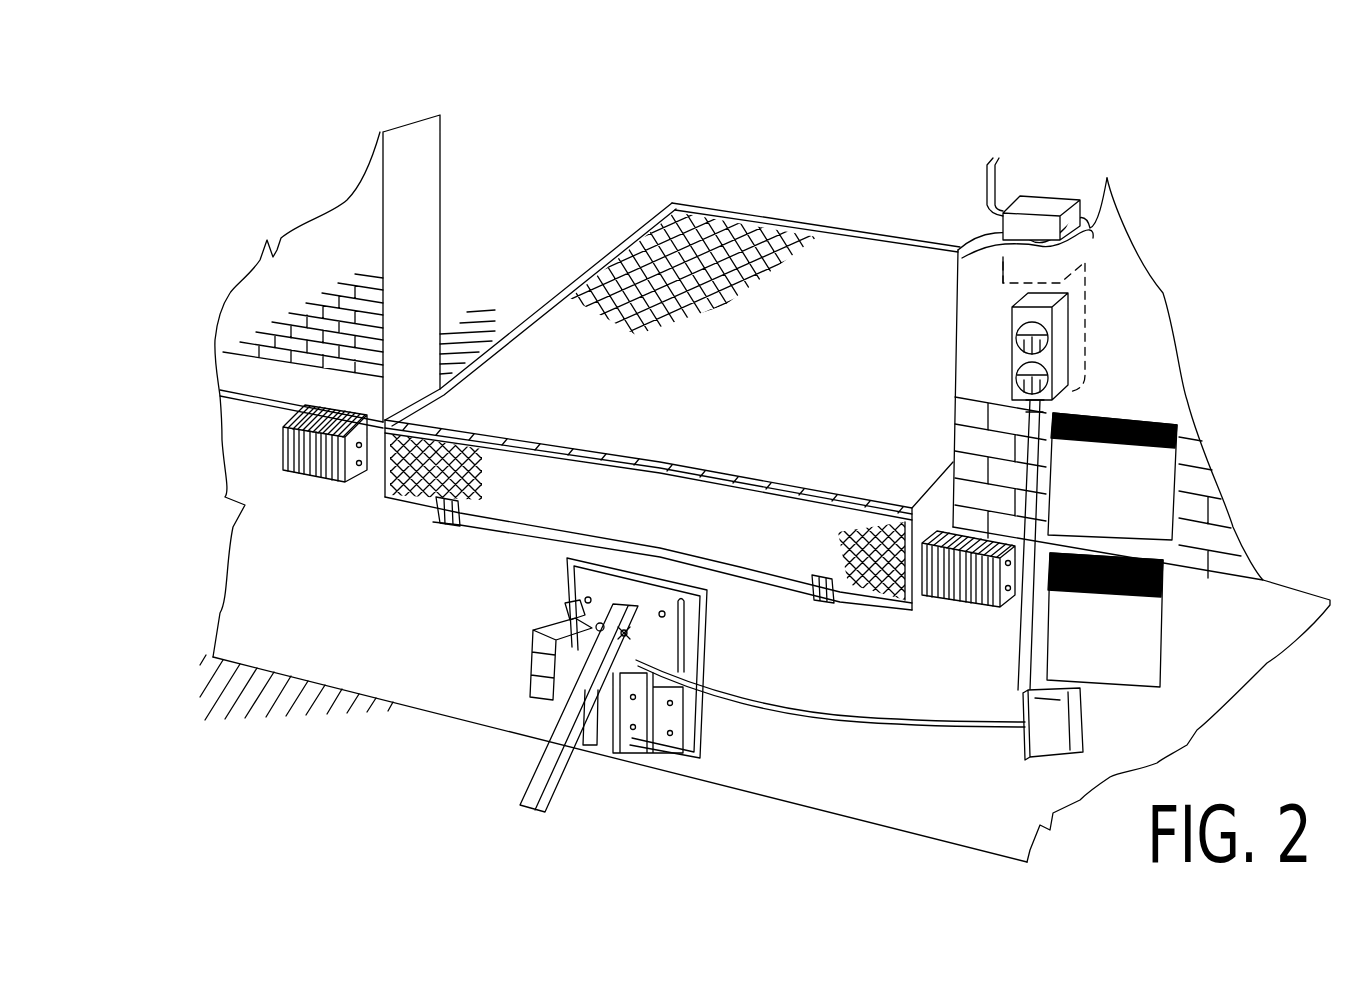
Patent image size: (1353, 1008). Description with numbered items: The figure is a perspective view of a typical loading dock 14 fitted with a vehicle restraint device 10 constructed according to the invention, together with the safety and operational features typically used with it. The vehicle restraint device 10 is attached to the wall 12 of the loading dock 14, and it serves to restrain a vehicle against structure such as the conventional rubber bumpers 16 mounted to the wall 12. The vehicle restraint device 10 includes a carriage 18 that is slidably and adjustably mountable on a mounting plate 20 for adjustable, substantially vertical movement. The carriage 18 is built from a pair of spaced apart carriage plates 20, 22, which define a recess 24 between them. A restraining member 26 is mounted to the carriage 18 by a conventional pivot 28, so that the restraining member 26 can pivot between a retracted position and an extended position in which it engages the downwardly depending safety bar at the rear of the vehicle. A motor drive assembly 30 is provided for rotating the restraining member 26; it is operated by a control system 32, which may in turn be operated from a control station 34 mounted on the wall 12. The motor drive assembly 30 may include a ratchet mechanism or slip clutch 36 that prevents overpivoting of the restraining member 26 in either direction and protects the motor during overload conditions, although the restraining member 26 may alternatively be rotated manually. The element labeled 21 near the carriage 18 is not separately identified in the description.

The vehicle restraint system 10 is at (395, 758).
The loading dock 12 is at (422, 623).
The building wall 14 is at (262, 520).
The dock bumpers 16 is at (337, 488).
The mounting bracket 18 is at (603, 710).
The mounting plate 20 is at (710, 737).
The pivot 21 is at (540, 700).
The control cable 22 is at (587, 740).
The hook head 24 is at (575, 614).
The restraint arm 26 is at (560, 690).
The fastener 28 is at (628, 632).
The housing 30 is at (530, 663).
The control box 32 is at (1083, 732).
The junction box 34 is at (1050, 194).
The dock leveler 36 is at (570, 603).